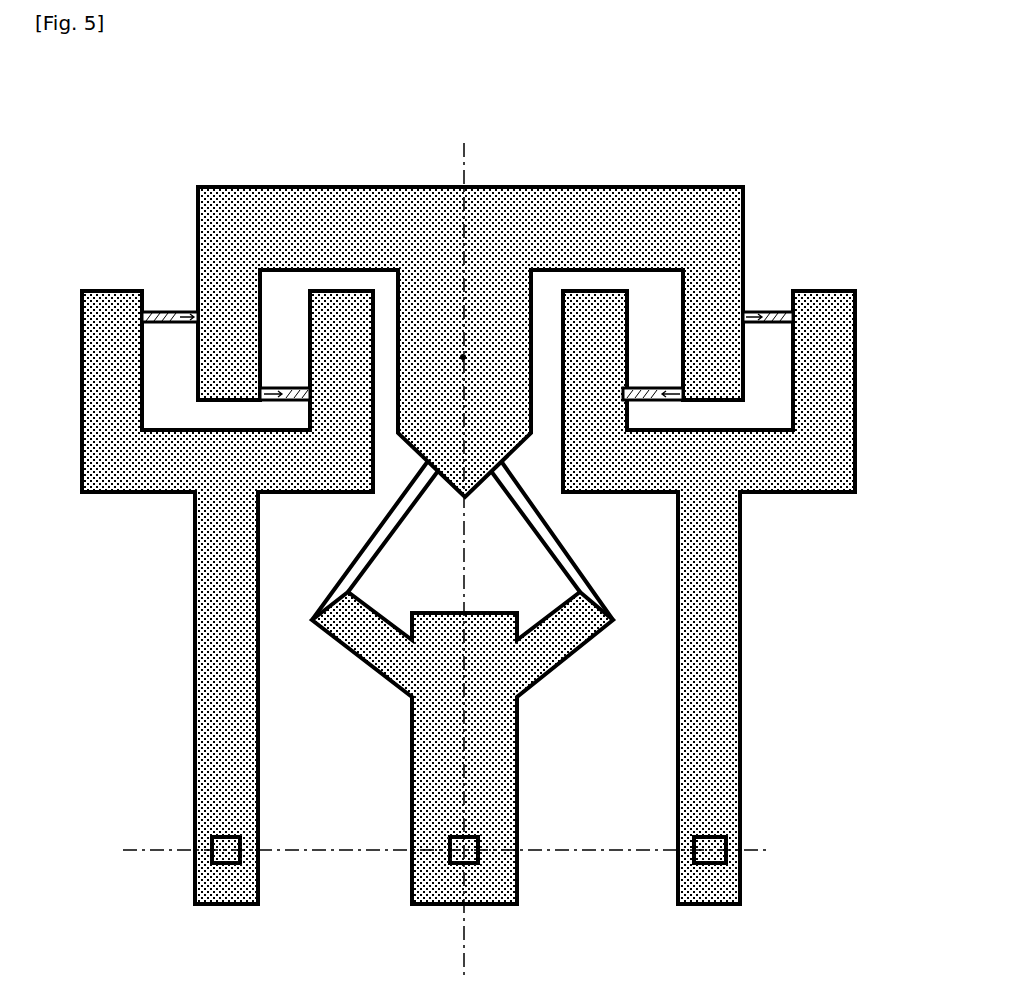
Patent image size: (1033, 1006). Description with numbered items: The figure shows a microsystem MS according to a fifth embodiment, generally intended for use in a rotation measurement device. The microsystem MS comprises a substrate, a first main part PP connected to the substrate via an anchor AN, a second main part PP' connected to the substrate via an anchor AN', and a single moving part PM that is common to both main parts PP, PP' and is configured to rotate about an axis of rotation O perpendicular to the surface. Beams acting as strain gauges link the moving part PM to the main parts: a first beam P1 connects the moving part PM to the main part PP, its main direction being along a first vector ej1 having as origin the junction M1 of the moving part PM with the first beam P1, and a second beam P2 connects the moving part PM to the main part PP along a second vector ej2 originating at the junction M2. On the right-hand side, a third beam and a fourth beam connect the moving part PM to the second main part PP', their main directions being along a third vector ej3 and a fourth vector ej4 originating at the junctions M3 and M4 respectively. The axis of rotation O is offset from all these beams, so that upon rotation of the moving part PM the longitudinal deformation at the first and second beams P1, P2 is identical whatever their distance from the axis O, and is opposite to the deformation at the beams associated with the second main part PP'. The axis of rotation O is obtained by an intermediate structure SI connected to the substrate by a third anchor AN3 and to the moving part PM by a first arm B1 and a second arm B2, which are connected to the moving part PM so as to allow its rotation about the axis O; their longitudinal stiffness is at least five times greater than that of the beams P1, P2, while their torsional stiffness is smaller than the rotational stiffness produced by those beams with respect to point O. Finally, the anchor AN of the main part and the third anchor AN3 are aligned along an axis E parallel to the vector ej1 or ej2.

The microsystem MS is at (246, 101).
The moving part PM is at (380, 200).
The main part PP is at (215, 556).
The second main part PP' is at (709, 556).
The first beam P1 is at (167, 311).
The second beam P2 is at (305, 387).
The junction of the moving part with the first beam M1 is at (187, 306).
The junction with the second beam M2 is at (270, 411).
The junction with the third beam M3 is at (768, 304).
The junction of the moving part with the fourth beam M4 is at (653, 378).
The first vector ej1 is at (180, 335).
The second vector ej2 is at (283, 410).
The third vector ej3 is at (762, 333).
The fourth vector ej4 is at (677, 408).
The axis of rotation O is at (462, 356).
The first arm B1 is at (372, 548).
The second arm B2 is at (557, 552).
The intermediate structure SI is at (424, 745).
The axis E is at (445, 836).
The anchor AN is at (239, 907).
The third anchor AN3 is at (462, 855).
The anchor of the second main part AN' is at (721, 907).